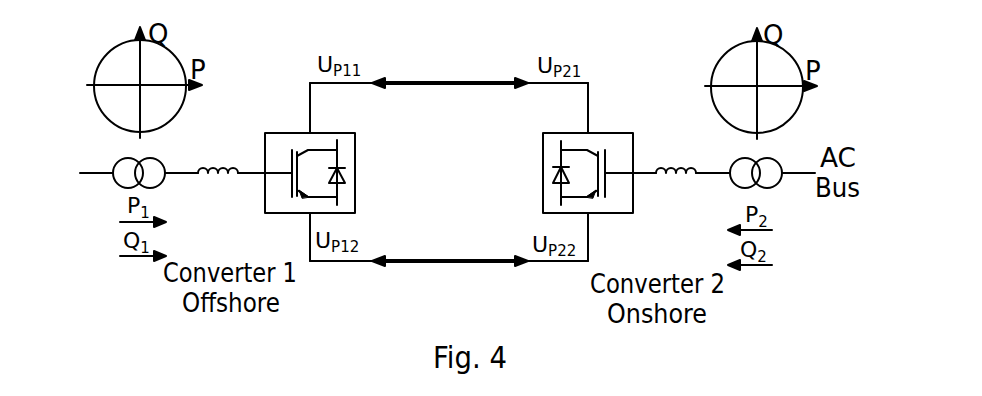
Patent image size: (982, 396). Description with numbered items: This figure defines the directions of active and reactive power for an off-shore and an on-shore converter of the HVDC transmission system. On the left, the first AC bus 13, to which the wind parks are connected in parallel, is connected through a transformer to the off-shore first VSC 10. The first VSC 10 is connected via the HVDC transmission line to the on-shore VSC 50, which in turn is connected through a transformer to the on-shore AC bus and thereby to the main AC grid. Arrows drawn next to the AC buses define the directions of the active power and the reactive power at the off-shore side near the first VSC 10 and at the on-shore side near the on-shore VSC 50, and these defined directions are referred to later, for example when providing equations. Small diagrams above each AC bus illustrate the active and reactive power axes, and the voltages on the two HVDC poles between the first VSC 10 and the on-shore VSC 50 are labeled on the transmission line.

The first VSC 10 is at (265, 197).
The on-shore VSC 50 is at (633, 204).
The first AC bus 13 is at (33, 190).